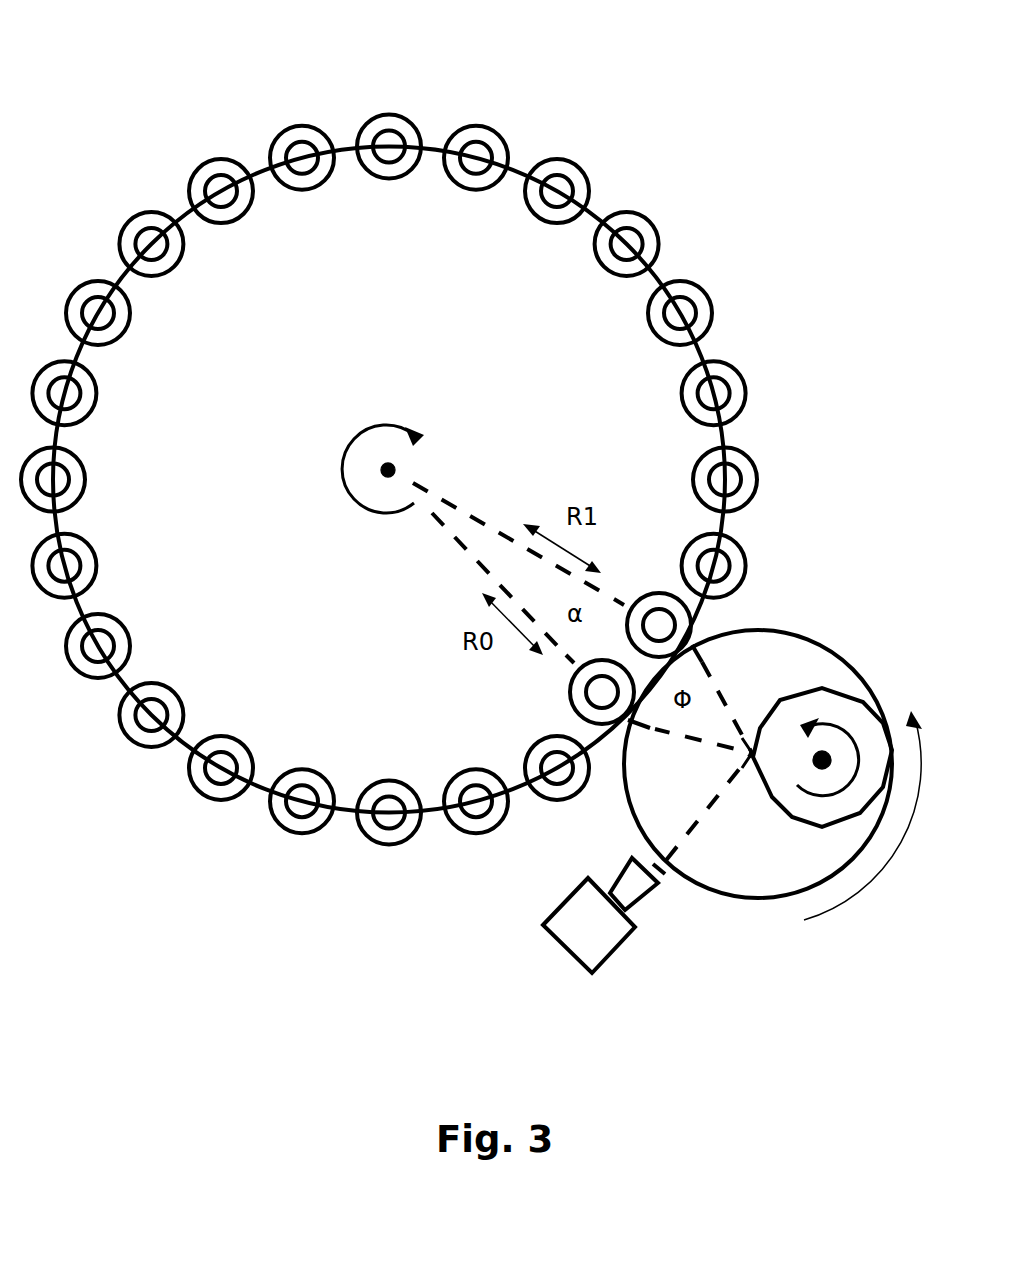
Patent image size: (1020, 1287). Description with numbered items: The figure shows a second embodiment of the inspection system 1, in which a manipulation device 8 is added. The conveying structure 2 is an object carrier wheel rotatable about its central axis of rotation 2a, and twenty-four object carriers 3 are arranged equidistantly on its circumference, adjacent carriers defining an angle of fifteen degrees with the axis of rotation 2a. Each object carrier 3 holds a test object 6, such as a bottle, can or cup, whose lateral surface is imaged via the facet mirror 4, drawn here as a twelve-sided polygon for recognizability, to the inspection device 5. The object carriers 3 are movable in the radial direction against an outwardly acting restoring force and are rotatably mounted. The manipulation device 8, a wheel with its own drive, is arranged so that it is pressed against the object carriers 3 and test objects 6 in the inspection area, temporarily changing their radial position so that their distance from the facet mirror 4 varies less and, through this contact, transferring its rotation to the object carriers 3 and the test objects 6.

The inspection system 1 is at (766, 186).
The conveying structure 2 is at (393, 369).
The axis of rotation 2a is at (395, 472).
The object carrier 3 is at (688, 635).
The facet mirror 4 is at (848, 690).
The inspection device 5 is at (612, 953).
The test object 6 is at (672, 633).
The manipulation device 8 is at (812, 642).